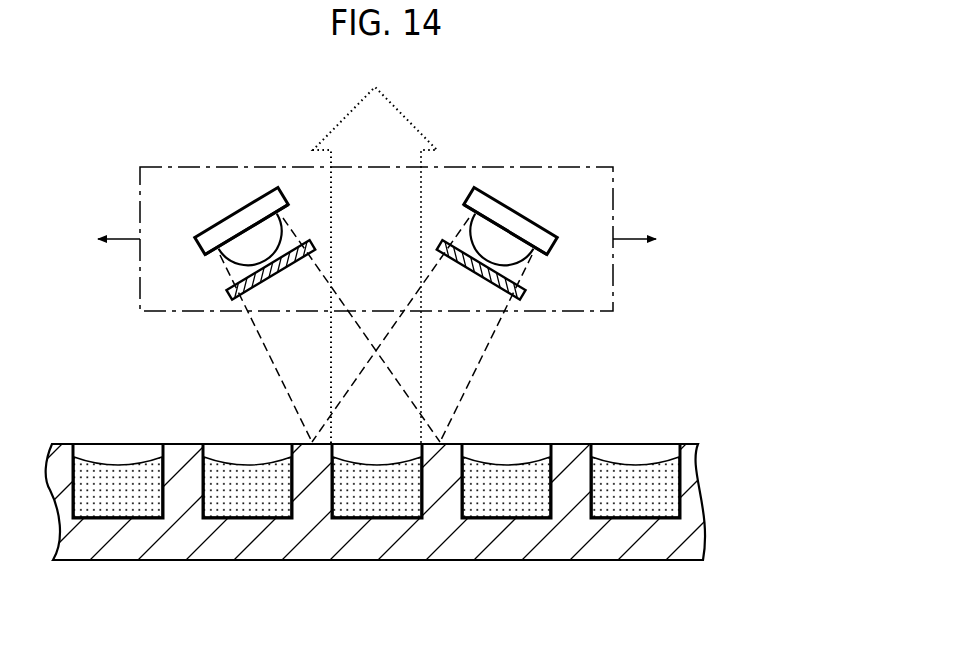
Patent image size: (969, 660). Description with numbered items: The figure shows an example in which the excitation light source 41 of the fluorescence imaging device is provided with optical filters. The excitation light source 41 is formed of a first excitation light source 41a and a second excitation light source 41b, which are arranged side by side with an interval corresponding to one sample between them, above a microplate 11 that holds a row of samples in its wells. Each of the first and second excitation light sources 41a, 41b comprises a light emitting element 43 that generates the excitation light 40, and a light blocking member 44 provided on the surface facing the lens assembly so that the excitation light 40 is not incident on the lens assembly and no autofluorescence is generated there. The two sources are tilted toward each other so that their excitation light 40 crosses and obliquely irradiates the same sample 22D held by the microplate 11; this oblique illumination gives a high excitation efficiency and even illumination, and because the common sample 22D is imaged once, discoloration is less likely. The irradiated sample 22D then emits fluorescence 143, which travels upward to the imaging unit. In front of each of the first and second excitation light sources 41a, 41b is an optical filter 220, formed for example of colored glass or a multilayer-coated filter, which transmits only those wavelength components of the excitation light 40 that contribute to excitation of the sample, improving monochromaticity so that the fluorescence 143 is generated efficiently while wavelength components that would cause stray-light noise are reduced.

The microplate 11 is at (689, 445).
The sample 22D is at (378, 508).
The excitation light 40 is at (267, 352).
The excitation light source 41 is at (165, 167).
The first excitation light source 41a is at (262, 190).
The second excitation light source 41b is at (490, 190).
The light emitting element 43 is at (236, 262).
The light blocking member 44 is at (198, 242).
The fluorescence 143 is at (399, 110).
The optical filter 220 is at (228, 297).